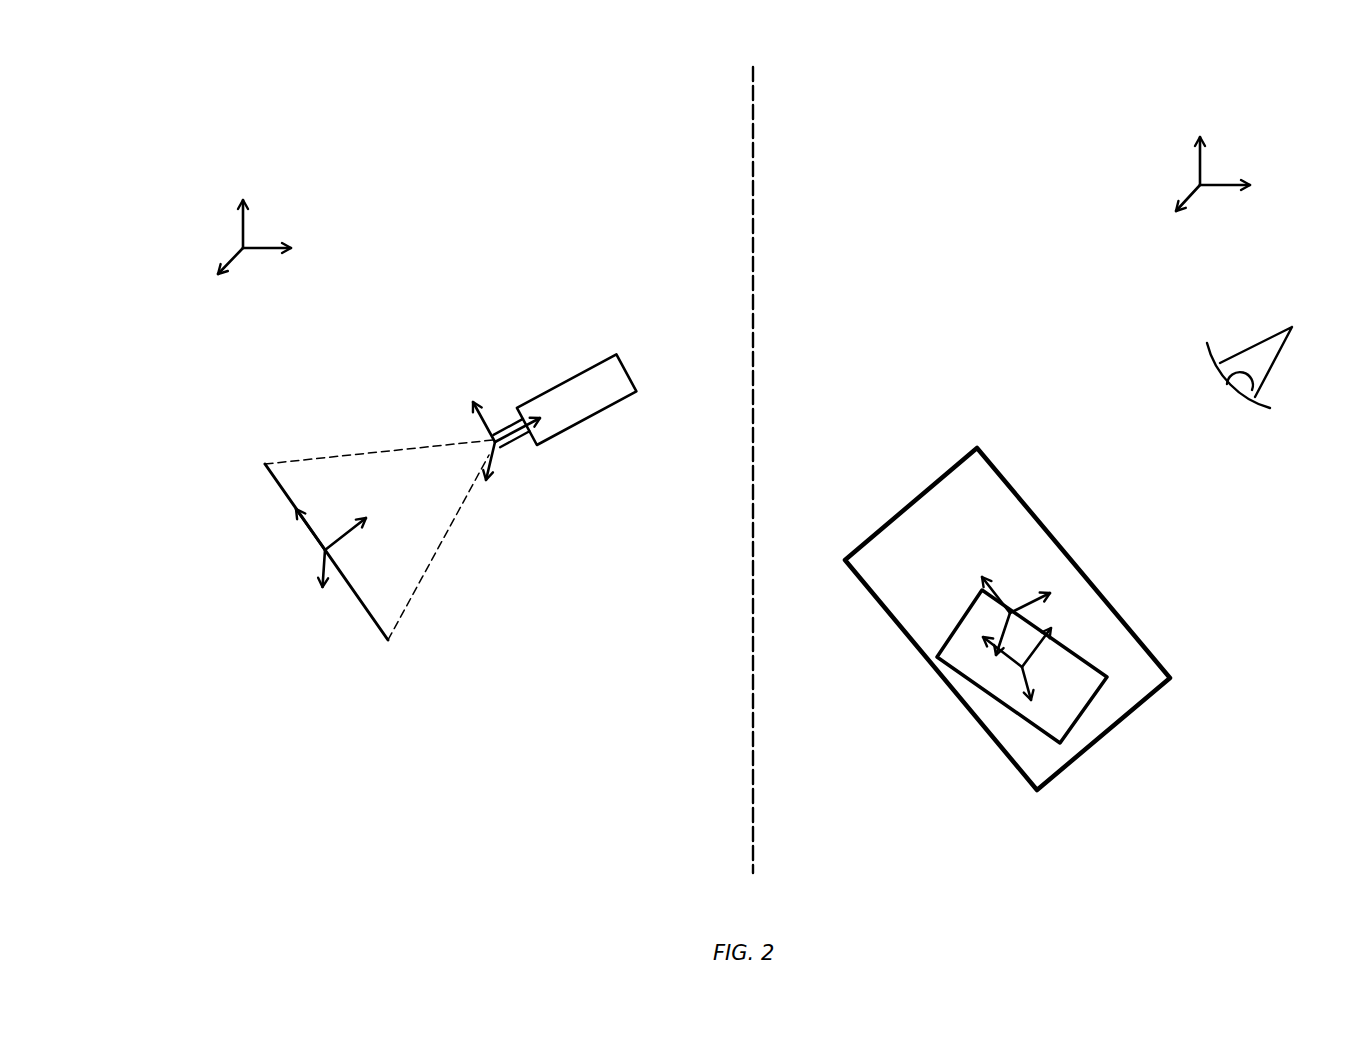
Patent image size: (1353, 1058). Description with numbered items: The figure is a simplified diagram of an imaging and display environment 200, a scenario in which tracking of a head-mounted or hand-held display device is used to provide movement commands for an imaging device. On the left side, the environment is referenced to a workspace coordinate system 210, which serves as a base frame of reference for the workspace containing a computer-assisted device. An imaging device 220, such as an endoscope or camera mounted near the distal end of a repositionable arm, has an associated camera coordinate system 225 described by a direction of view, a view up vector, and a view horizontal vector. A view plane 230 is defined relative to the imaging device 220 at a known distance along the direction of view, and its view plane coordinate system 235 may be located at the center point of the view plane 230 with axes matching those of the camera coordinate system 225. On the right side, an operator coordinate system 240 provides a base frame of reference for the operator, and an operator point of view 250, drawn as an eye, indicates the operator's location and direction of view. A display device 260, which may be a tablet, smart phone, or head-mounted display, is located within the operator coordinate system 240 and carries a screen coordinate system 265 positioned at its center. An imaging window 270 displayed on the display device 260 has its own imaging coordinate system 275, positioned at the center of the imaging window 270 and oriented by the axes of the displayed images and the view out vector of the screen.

The imaging and display environment 200 is at (210, 84).
The workspace coordinate system 210 is at (243, 248).
The imaging device 220 is at (562, 380).
The camera coordinate system 225 is at (500, 453).
The view plane 230 is at (370, 617).
The view plane coordinate system 235 is at (325, 550).
The operator coordinate system 240 is at (1200, 185).
The operator point of view 250 is at (1260, 333).
The display device 260 is at (1115, 730).
The screen coordinate system 265 is at (1002, 650).
The imaging window 270 is at (1063, 748).
The imaging coordinate system 275 is at (1023, 667).